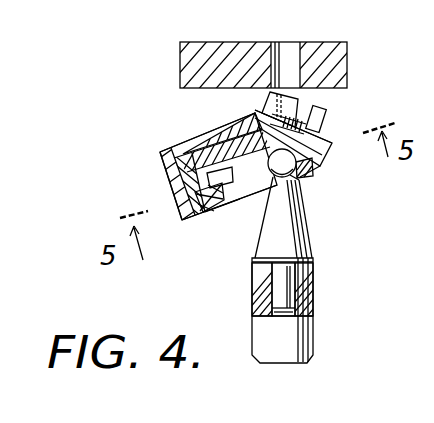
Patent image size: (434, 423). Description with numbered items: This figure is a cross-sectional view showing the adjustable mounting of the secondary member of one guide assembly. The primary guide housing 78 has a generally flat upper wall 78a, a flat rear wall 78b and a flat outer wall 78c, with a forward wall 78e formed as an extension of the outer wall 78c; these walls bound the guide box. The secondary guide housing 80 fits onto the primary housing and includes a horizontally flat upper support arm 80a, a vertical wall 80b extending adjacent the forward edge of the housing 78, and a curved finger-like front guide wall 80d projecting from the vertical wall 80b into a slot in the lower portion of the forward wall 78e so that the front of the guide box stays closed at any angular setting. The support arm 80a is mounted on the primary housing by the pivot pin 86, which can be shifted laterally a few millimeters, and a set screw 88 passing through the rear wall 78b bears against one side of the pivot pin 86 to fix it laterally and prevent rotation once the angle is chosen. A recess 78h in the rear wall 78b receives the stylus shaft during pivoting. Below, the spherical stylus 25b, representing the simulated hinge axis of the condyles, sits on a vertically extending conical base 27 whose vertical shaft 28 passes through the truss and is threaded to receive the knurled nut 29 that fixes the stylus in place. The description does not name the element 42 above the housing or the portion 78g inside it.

The work plate 42 is at (341, 32).
The secondary guide housing 80 is at (177, 145).
The upper support arm 80a is at (205, 135).
The vertical wall 80b is at (165, 167).
The front guide wall 80d is at (217, 213).
The pivot pin 86 is at (250, 121).
The set screw 88 is at (324, 110).
The primary guide housing 78 is at (325, 147).
The upper wall 78a is at (177, 181).
The rear wall 78b is at (327, 170).
The outer wall 78c is at (221, 205).
The forward wall 78e is at (213, 222).
The clamp body slot 78g is at (268, 177).
The recess 78h is at (313, 177).
The spherical stylus 25b is at (298, 181).
The conical base 27 is at (305, 240).
The vertical shaft 28 is at (298, 287).
The knurled nut 29 is at (305, 335).